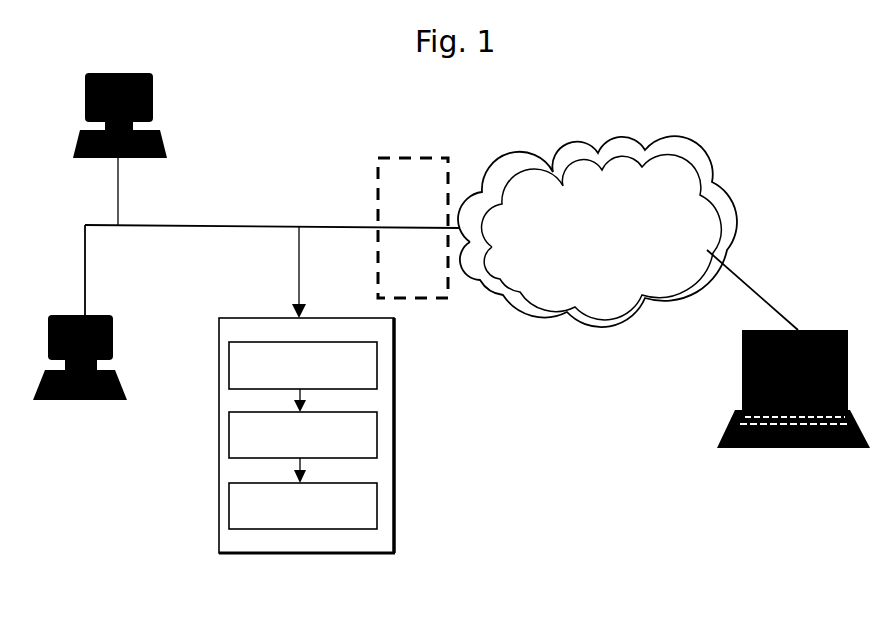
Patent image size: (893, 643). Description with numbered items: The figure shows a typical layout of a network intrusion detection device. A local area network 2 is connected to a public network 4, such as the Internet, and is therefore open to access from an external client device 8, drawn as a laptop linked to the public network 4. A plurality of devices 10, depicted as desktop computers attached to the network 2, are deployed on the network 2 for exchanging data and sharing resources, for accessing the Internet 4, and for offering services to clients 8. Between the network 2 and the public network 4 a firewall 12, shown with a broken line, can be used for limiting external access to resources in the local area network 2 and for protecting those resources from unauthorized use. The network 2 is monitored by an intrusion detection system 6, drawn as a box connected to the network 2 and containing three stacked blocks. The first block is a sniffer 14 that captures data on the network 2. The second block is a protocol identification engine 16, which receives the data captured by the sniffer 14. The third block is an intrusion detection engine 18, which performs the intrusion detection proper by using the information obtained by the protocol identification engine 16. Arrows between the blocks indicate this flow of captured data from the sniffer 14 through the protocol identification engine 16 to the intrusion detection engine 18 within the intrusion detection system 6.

The local area network 2 is at (107, 223).
The public network 4 is at (690, 207).
The intrusion detection system 6 is at (263, 453).
The client device 8 is at (785, 450).
The devices 10 is at (163, 133).
The firewall 12 is at (413, 159).
The sniffer 14 is at (242, 375).
The protocol identification engine 16 is at (242, 447).
The intrusion detection engine 18 is at (242, 517).